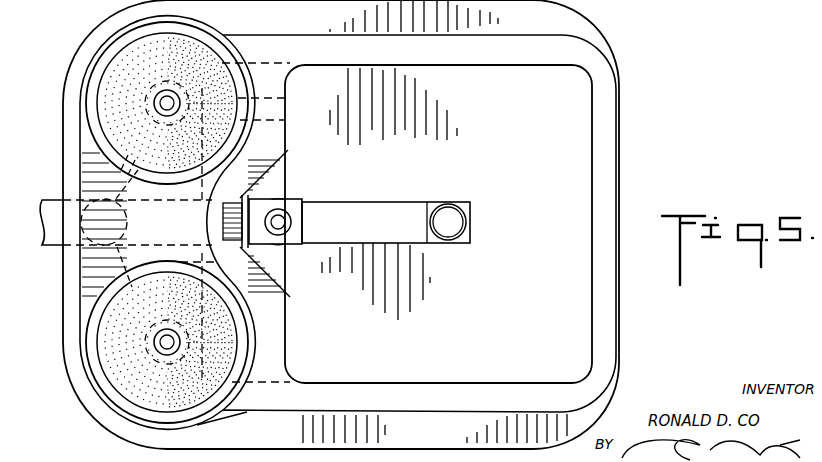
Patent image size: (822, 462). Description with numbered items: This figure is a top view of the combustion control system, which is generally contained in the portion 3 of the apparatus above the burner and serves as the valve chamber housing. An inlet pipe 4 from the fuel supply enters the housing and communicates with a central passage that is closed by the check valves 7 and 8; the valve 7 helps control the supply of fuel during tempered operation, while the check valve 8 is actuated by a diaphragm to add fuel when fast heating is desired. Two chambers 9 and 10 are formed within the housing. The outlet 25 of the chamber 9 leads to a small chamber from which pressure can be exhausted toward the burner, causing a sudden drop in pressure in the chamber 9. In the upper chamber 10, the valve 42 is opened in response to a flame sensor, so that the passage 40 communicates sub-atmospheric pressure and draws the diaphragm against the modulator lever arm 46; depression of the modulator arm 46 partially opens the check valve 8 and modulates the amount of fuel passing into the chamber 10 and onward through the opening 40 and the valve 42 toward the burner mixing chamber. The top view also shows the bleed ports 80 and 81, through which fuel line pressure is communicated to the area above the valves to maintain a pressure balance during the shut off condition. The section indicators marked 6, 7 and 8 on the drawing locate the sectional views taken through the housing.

The portion 3 is at (658, 125).
The inlet pipe 4 is at (45, 201).
The section line 6 is at (43, 107).
The check valve 7 is at (37, 347).
The check valve 8 is at (30, 228).
The chamber 9 is at (263, 376).
The chamber 10 is at (486, 166).
The outlet 25 is at (246, 311).
The passage 40 is at (291, 105).
The valve 42 is at (192, 48).
The modulator lever arm 46 is at (393, 213).
The bleed port 80 is at (156, 119).
The bleed port 81 is at (156, 329).